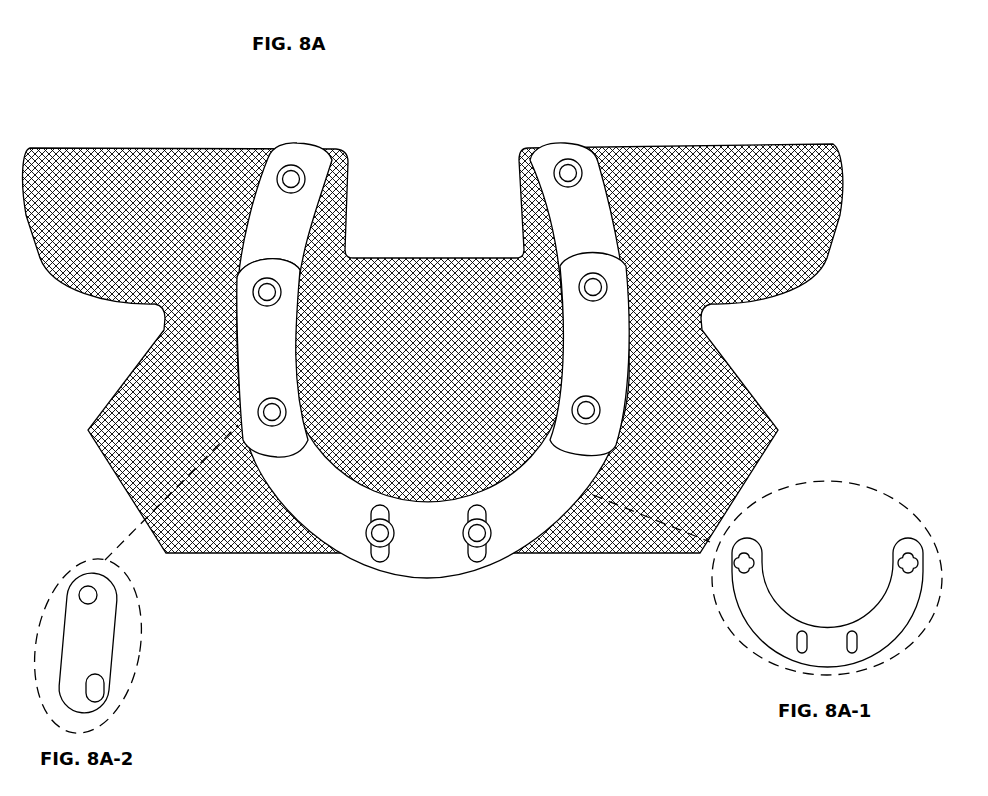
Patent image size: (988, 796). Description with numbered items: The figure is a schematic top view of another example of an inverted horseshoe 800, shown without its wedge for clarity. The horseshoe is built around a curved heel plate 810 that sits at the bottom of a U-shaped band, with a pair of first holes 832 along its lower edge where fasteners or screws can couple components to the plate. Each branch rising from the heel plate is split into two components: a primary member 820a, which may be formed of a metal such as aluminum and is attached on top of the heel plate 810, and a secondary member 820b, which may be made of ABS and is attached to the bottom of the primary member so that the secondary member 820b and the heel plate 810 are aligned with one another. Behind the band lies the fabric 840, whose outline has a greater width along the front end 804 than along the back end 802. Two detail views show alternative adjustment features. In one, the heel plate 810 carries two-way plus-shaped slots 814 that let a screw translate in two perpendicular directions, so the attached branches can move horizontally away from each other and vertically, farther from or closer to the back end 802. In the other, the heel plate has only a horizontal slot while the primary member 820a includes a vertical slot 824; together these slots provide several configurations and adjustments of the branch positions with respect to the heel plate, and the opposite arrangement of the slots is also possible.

In FIG. 8A, the inverted horseshoe 800 is at (590, 572).
In FIG. 8A, the back end 802 is at (502, 632).
In FIG. 8A, the front end 804 is at (461, 103).
In FIG. 8A, the heel plate 810 is at (430, 580).
In FIG. 8A-1, the heel plate 810 is at (890, 628).
In FIG. 8A-1, the two-way +-shaped slots 814 is at (903, 556).
In FIG. 8A, the primary member 820a is at (238, 325).
In FIG. 8A-2, the primary member 820a is at (100, 647).
In FIG. 8A, the secondary member 820b is at (290, 222).
In FIG. 8A, the vertical slot 824 is at (566, 158).
In FIG. 8A-2, the vertical slot 824 is at (100, 690).
In FIG. 8A, the first holes 832 is at (477, 535).
In FIG. 8A, the fabric 840 is at (205, 158).